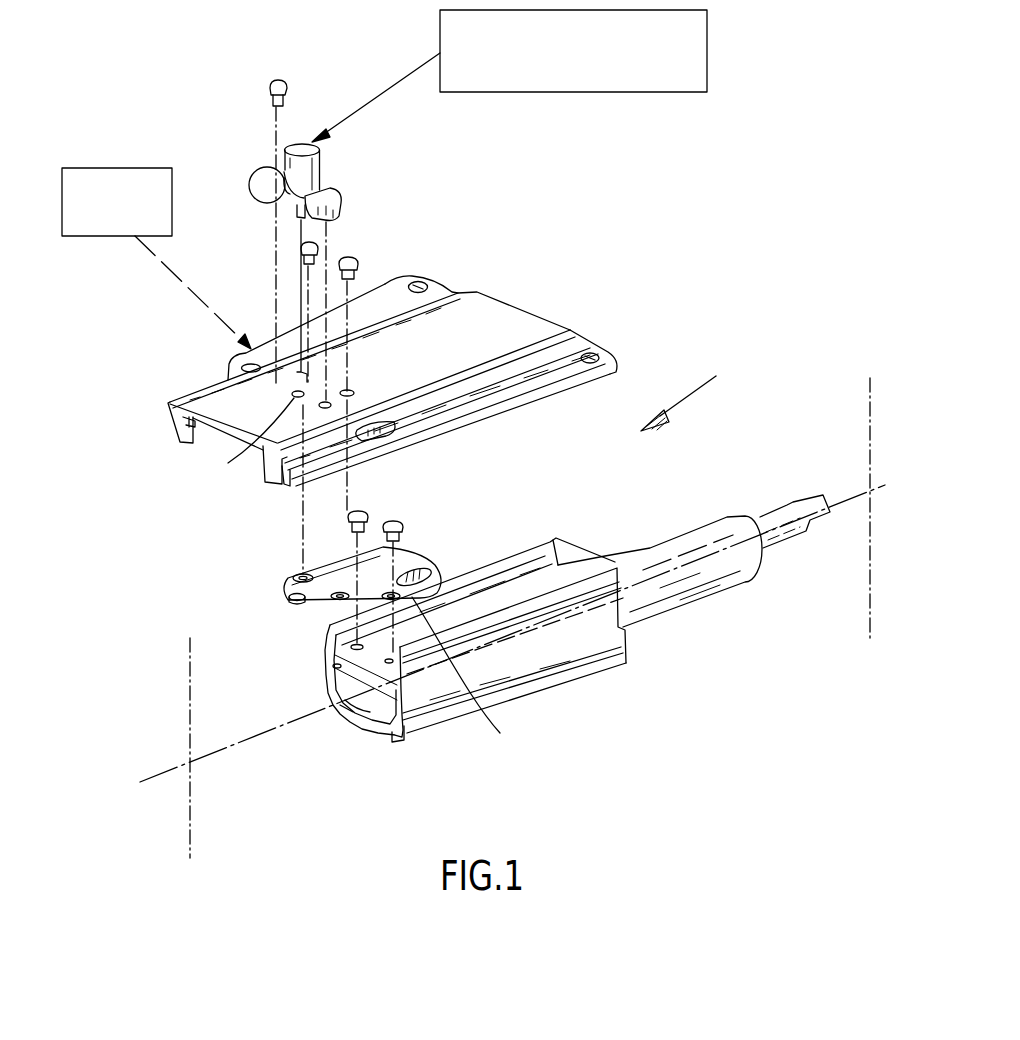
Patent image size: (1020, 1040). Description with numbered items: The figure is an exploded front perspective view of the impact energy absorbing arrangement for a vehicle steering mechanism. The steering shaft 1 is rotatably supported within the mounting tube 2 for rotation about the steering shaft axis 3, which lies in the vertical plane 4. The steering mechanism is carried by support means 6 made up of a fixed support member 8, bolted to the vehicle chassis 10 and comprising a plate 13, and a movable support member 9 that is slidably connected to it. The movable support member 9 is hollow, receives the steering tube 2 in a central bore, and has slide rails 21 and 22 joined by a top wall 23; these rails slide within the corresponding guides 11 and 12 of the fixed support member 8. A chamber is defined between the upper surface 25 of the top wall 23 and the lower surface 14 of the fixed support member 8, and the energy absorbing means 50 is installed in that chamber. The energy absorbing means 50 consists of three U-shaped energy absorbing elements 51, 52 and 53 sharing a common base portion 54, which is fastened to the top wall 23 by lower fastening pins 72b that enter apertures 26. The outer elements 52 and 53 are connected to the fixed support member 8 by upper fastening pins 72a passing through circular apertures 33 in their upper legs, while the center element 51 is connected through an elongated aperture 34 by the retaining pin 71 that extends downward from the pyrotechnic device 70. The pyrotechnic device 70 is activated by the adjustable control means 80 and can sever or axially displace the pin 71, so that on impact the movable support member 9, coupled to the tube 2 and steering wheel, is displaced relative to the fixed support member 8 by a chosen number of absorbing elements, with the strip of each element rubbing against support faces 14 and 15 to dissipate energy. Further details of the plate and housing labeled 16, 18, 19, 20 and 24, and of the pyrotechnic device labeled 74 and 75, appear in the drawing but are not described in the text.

The steering shaft 1 is at (788, 542).
The mounting tube 2 is at (706, 592).
The steering shaft axis 3 is at (851, 490).
The vertical plane 4 is at (867, 412).
The support means 6 is at (683, 388).
The fixed support member 8 is at (368, 378).
The movable support member 9 is at (443, 624).
The vehicle chassis 10 is at (122, 168).
The slide rail 11 is at (290, 488).
The slide rail 12 is at (172, 440).
The plate 13 is at (532, 308).
The lower surface 14 is at (274, 468).
The support face 15 is at (446, 318).
The holes 16 is at (301, 370).
The plate surface 18 is at (245, 437).
The hole 19 is at (328, 408).
The mounting hole 20 is at (262, 371).
The slide rail 21 is at (533, 655).
The slide rail 22 is at (328, 652).
The top wall 23 is at (566, 574).
The housing bottom 24 is at (356, 716).
The upper surface 25 is at (470, 605).
The apertures 26 is at (375, 735).
The circular apertures 33 is at (298, 574).
The elongated aperture 34 is at (304, 598).
The energy absorbing means 50 is at (328, 575).
The center energy absorbing element 51 is at (287, 595).
The energy absorbing element 52 is at (414, 578).
The energy absorbing element 53 is at (335, 562).
The common base portion 54 is at (470, 672).
The pyrotechnic device 70 is at (314, 176).
The retaining pin 71 is at (296, 219).
The upper fastening pins 72a is at (324, 245).
The lower fastening pins 72b is at (368, 510).
The sensor flange 74 is at (337, 222).
The bolt 75 is at (272, 86).
The adjustable control means 80 is at (648, 78).